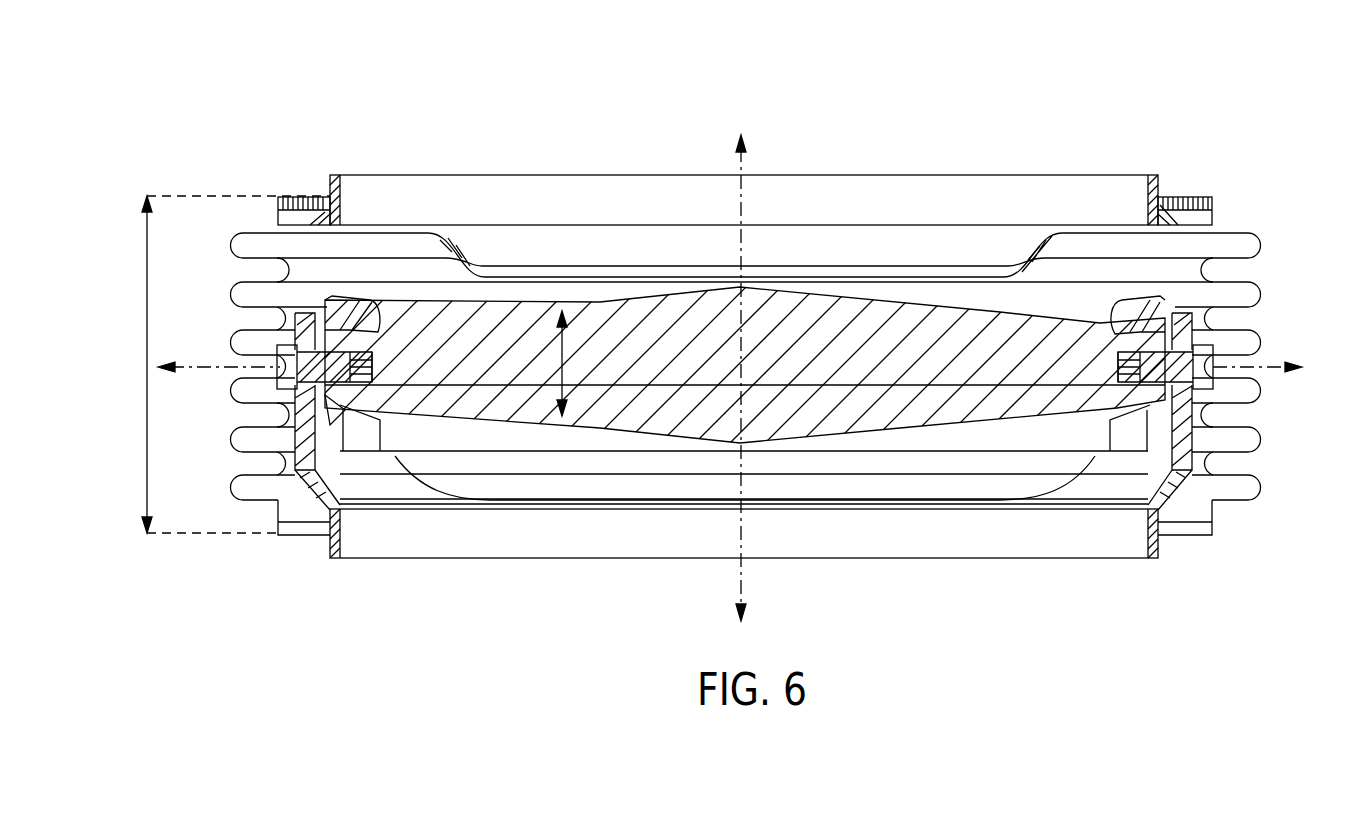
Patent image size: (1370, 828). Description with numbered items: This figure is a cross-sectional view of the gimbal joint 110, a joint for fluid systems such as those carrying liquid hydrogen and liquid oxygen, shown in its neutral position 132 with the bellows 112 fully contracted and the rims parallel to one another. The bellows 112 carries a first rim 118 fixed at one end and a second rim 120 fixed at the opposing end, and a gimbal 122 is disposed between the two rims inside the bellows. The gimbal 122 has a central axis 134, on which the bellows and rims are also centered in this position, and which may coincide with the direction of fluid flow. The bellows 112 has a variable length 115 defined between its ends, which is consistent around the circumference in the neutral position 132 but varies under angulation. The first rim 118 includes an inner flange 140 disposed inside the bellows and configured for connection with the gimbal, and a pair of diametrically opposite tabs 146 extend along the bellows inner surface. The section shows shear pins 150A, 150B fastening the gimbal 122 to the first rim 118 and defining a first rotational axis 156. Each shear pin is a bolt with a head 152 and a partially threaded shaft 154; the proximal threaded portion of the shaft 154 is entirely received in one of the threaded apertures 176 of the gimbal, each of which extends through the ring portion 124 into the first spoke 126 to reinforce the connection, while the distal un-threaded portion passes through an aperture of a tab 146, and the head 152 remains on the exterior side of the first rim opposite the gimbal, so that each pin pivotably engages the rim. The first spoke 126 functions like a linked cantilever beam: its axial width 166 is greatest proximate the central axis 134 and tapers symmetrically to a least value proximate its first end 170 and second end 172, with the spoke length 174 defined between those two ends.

The gimbal joint 110 is at (372, 125).
The bellows 112 is at (1178, 212).
The variable length 115 is at (147, 340).
The first rim 118 is at (572, 540).
The second rim 120 is at (542, 196).
The gimbal 122 is at (830, 442).
The ring portion 124 is at (360, 312).
The first spoke 126 is at (957, 305).
The neutral position 132 is at (456, 118).
The central axis 134 is at (736, 169).
The inner flange 140 is at (306, 212).
The tab 146 is at (850, 293).
The first shear pin 150A is at (330, 372).
The second shear pin 150B is at (1220, 378).
The head 152 is at (300, 364).
The partially threaded shaft 154 is at (300, 430).
The first rotational axis 156 is at (1265, 362).
The axial width 166 is at (576, 364).
The first end 170 is at (397, 430).
The second end 172 is at (1008, 432).
The length 174 is at (871, 382).
The threaded aperture 176 is at (343, 386).